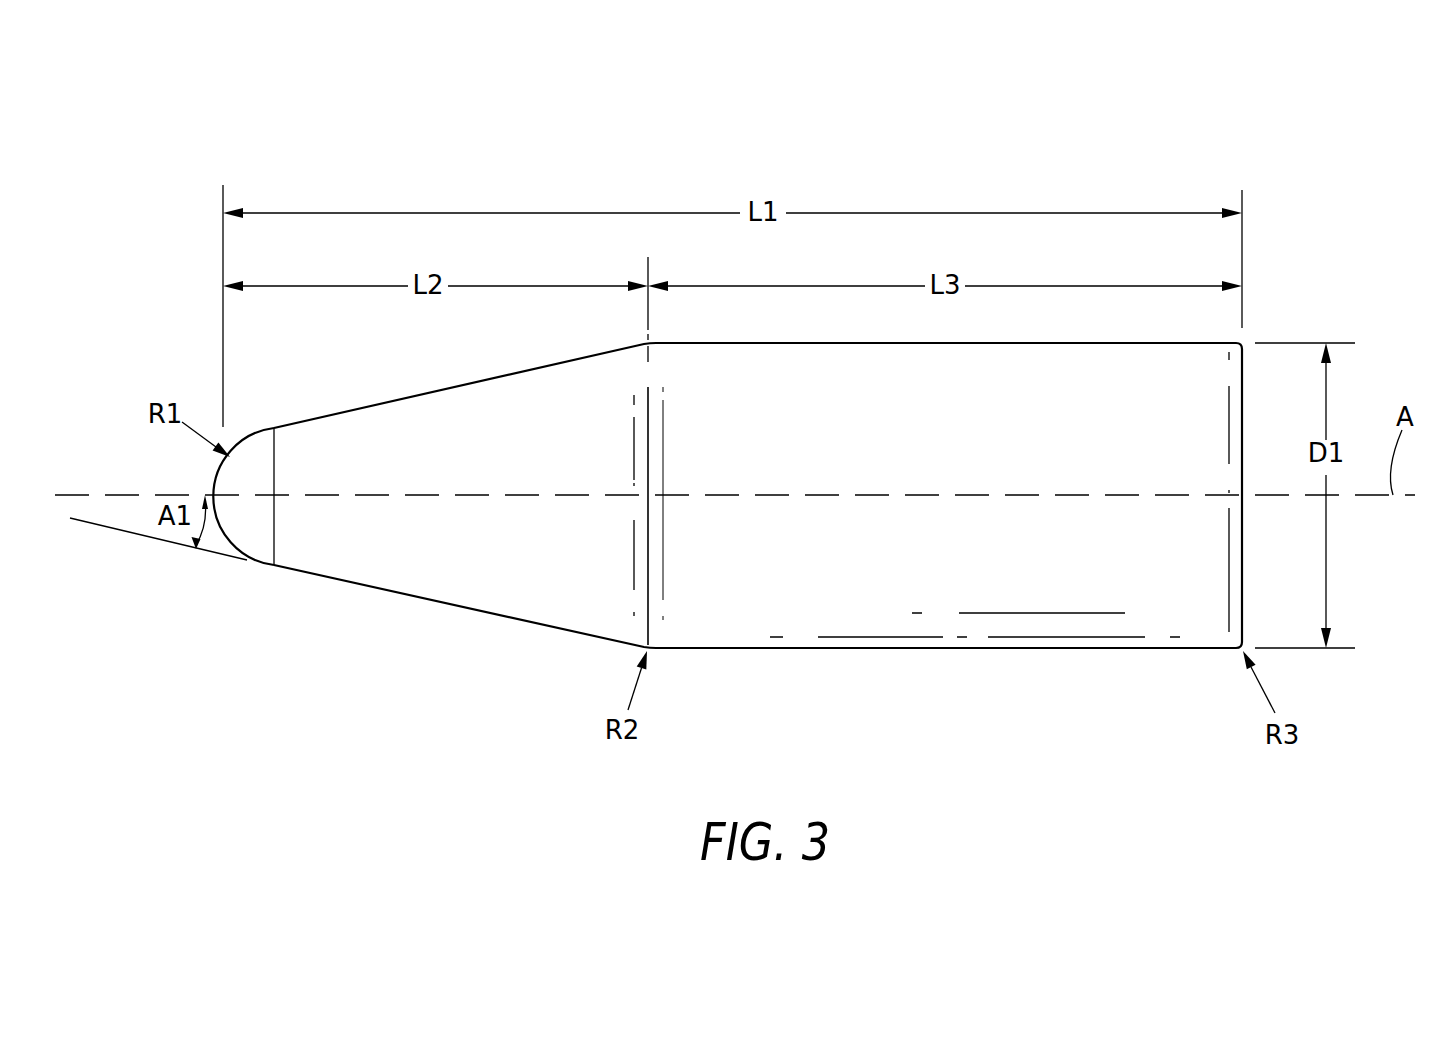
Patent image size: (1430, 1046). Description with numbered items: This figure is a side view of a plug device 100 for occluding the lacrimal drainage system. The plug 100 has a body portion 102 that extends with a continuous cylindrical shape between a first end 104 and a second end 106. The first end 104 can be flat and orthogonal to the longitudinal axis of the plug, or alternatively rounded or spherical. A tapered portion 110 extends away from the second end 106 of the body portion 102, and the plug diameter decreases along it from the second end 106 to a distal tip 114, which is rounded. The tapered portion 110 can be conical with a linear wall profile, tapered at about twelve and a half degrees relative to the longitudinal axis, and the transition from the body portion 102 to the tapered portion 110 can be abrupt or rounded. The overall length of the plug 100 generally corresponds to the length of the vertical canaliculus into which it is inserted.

The plug device 100 is at (380, 118).
The body portion 102 is at (877, 588).
The first end 104 is at (1242, 373).
The second end 106 is at (653, 430).
The tapered portion 110 is at (435, 413).
The distal tip 114 is at (260, 527).